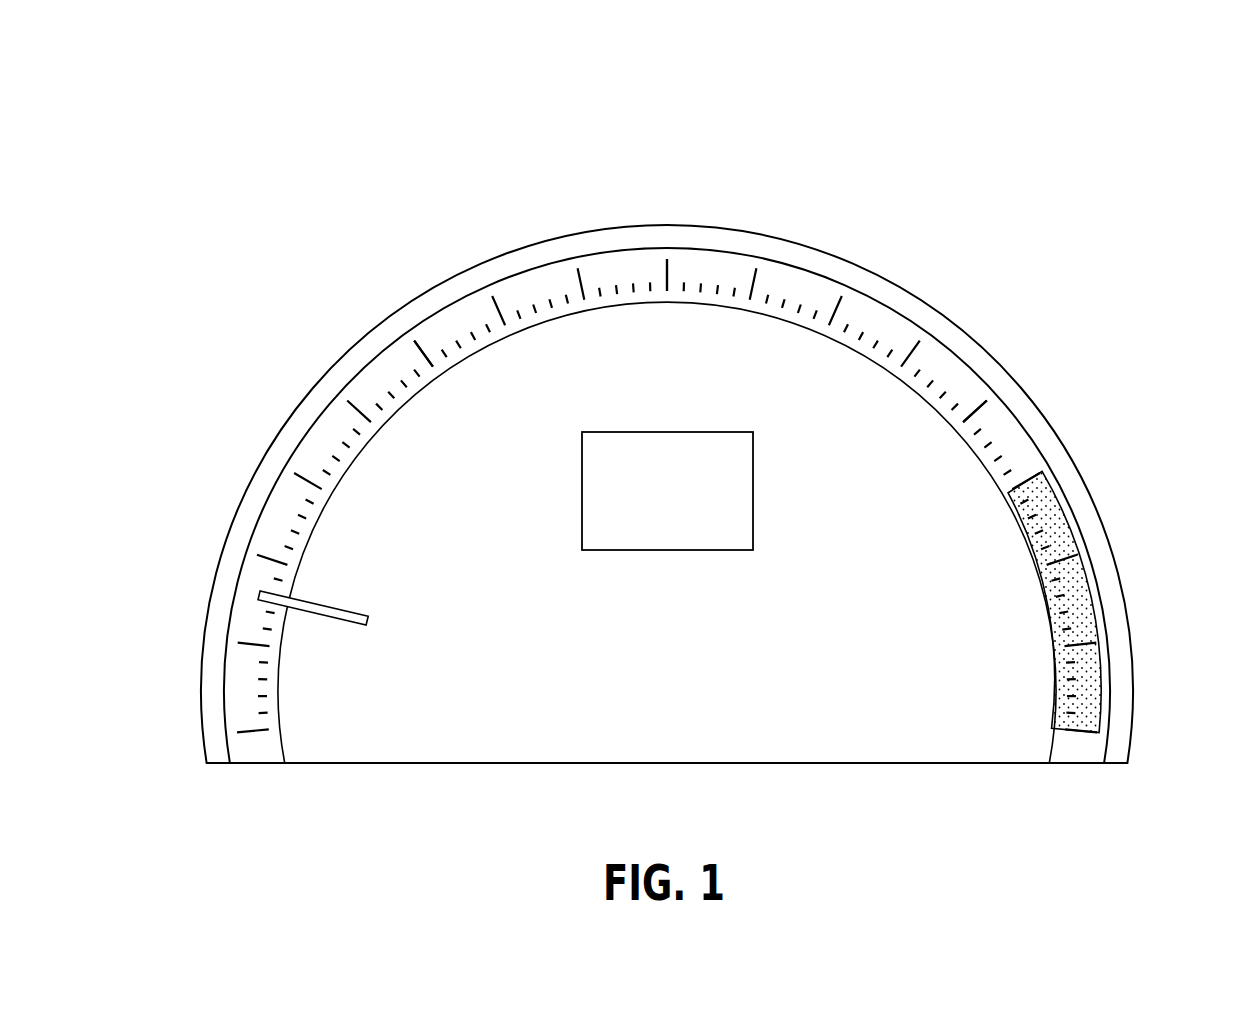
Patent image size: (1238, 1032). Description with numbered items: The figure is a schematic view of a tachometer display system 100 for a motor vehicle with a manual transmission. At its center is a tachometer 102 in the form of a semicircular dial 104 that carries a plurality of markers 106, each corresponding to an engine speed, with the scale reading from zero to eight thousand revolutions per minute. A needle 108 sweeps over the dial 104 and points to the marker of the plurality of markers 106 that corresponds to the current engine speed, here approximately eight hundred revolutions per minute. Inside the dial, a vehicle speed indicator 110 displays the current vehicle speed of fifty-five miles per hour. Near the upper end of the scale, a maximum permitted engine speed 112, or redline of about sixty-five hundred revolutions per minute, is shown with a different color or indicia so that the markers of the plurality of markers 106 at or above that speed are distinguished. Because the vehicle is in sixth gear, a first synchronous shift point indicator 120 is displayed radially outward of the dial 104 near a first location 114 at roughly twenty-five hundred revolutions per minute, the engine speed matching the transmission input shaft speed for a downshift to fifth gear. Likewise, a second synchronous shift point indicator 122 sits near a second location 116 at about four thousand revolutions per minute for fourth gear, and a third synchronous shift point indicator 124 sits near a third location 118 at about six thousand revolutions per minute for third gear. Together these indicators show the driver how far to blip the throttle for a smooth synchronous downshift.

The tachometer display system 100 is at (921, 131).
The tachometer 102 is at (690, 697).
The dial 104 is at (205, 623).
The plurality of markers 106 is at (441, 385).
The needle 108 is at (354, 627).
The vehicle speed indicator 110 is at (708, 568).
The maximum permitted engine speed 112 is at (1117, 462).
The first location 114 is at (422, 352).
The second location 116 is at (671, 272).
The third location 118 is at (980, 407).
The first synchronous shift point indicator 120 is at (367, 250).
The second synchronous shift point indicator 122 is at (659, 158).
The third synchronous shift point indicator 124 is at (1052, 333).